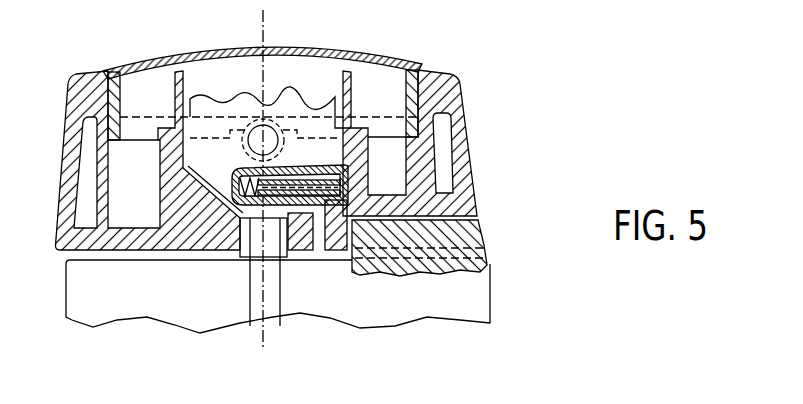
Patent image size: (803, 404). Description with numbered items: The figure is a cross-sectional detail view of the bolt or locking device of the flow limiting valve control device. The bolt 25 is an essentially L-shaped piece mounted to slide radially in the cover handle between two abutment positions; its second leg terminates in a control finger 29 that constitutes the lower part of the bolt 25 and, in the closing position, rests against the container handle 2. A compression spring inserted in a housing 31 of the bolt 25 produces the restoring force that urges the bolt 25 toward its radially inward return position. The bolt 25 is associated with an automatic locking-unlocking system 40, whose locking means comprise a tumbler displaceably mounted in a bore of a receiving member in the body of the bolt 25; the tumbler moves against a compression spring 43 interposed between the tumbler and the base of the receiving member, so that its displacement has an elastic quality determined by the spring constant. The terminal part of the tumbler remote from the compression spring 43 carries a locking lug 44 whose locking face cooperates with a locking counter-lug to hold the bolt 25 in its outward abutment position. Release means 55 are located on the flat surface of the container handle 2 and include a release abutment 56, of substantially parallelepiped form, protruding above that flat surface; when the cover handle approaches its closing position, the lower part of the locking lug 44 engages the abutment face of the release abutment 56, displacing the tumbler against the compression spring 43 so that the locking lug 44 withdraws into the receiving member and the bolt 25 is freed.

The container handle 2 is at (124, 295).
The bolt 25 is at (213, 133).
The control finger 29 is at (275, 250).
The housing 31 is at (237, 117).
The automatic locking-unlocking system 40 is at (315, 170).
The compression spring 43 is at (250, 258).
The locking lug 44 is at (327, 240).
The release means 55 is at (478, 232).
The release abutment 56 is at (479, 244).